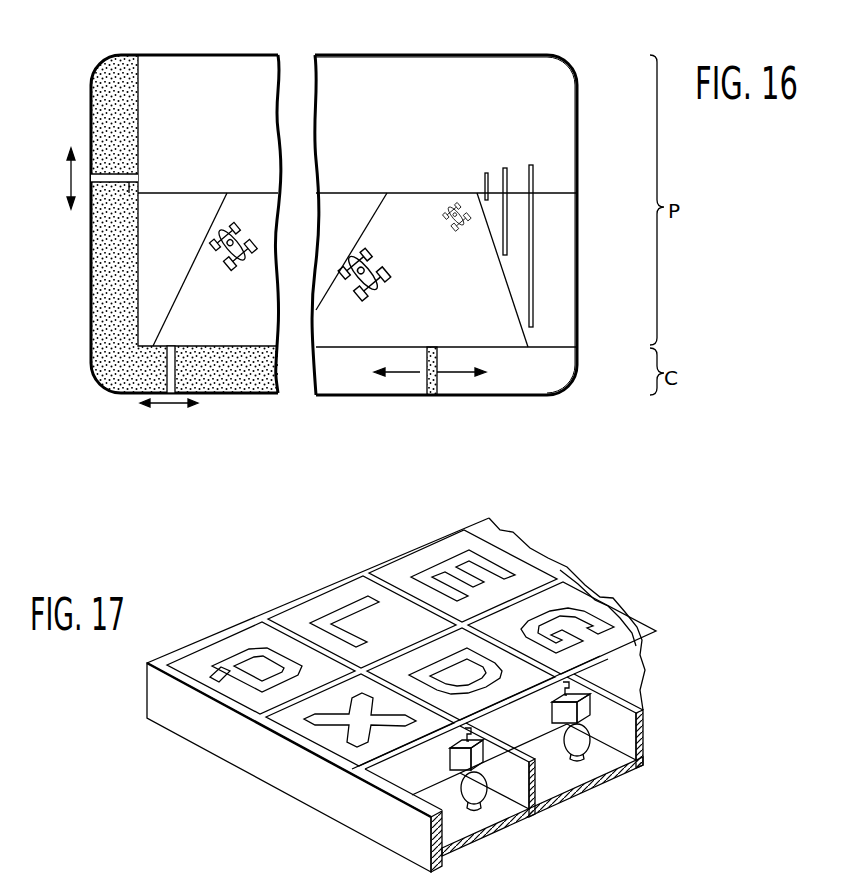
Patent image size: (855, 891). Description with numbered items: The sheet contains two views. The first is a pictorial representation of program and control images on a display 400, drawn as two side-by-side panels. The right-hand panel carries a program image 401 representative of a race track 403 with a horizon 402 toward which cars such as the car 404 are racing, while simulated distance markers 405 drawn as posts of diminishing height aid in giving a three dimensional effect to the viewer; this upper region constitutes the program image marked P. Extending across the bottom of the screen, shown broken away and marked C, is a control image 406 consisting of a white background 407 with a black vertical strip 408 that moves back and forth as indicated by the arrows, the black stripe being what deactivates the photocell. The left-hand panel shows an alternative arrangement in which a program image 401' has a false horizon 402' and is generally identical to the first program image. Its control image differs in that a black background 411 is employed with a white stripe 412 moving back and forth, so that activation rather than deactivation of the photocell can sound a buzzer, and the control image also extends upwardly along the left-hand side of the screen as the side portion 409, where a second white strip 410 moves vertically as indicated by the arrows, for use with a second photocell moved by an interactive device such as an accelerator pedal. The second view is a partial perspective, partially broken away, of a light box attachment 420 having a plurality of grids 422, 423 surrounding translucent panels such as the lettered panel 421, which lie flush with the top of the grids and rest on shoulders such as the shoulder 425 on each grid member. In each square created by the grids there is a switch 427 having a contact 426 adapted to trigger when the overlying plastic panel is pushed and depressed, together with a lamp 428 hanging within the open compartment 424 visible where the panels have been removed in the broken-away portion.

In FIG. 16, the display 400 is at (393, 48).
In FIG. 16, the program image 401 is at (445, 205).
In FIG. 16, the program image 401' is at (186, 207).
In FIG. 16, the horizon 402 is at (446, 171).
In FIG. 16, the false horizon 402' is at (208, 170).
In FIG. 16, the race track 403 is at (385, 210).
In FIG. 16, the car 404 is at (380, 277).
In FIG. 16, the simulated distance markers 405 is at (535, 173).
In FIG. 16, the control image 406 is at (467, 396).
In FIG. 16, the white background 407 is at (362, 357).
In FIG. 16, the black vertical strip 408 is at (435, 357).
In FIG. 16, the control image side portion 409 is at (98, 249).
In FIG. 16, the second white strip 410 is at (129, 195).
In FIG. 16, the black background 411 is at (222, 394).
In FIG. 16, the white stripe 412 is at (173, 357).
In FIG. 17, the light box attachment 420 is at (202, 738).
In FIG. 17, the translucent panel 421 is at (293, 721).
In FIG. 17, the grid 422 is at (283, 628).
In FIG. 17, the grid 423 is at (439, 632).
In FIG. 17, the compartment 424 is at (608, 751).
In FIG. 17, the shoulder 425 is at (512, 766).
In FIG. 17, the contact 426 is at (565, 687).
In FIG. 17, the switch 427 is at (583, 710).
In FIG. 17, the lamp 428 is at (593, 748).